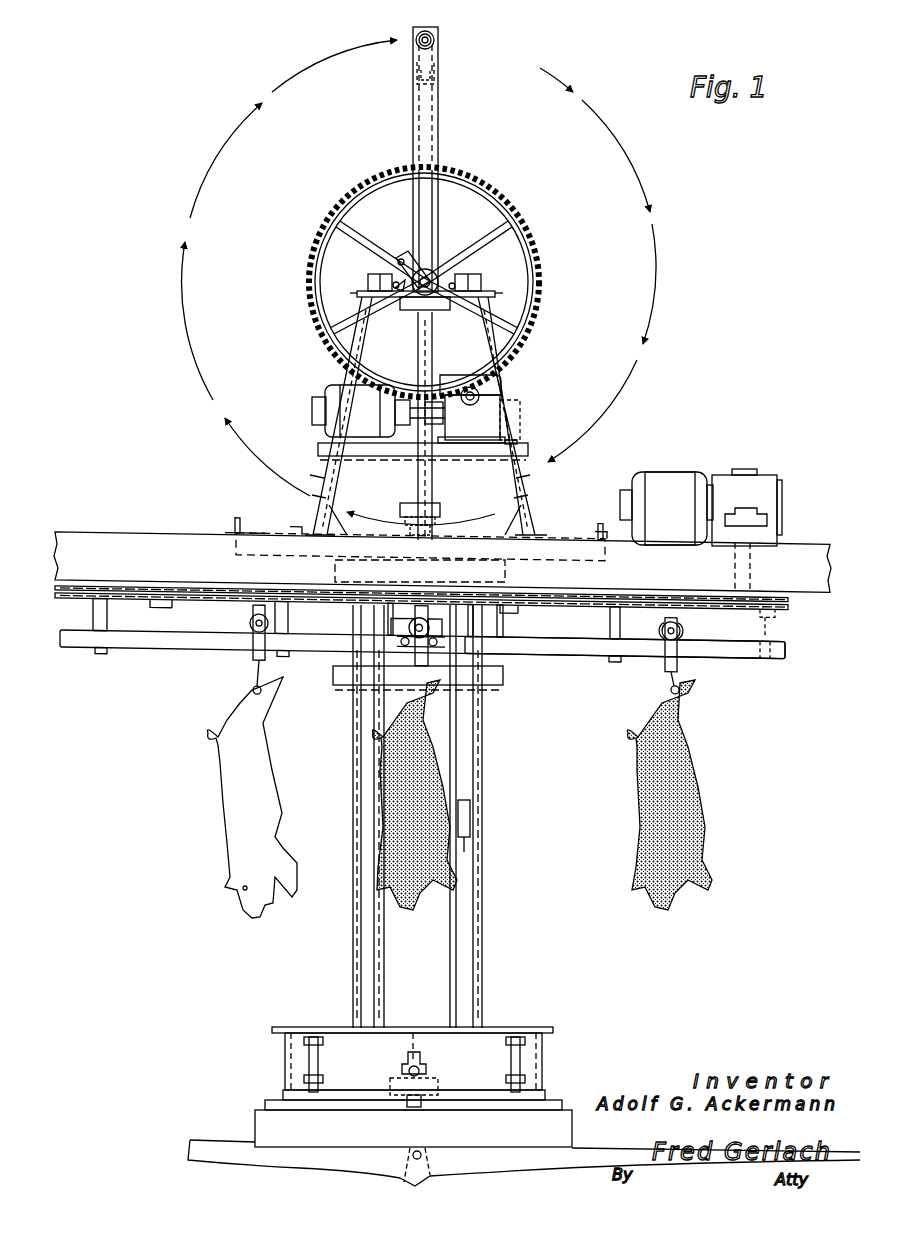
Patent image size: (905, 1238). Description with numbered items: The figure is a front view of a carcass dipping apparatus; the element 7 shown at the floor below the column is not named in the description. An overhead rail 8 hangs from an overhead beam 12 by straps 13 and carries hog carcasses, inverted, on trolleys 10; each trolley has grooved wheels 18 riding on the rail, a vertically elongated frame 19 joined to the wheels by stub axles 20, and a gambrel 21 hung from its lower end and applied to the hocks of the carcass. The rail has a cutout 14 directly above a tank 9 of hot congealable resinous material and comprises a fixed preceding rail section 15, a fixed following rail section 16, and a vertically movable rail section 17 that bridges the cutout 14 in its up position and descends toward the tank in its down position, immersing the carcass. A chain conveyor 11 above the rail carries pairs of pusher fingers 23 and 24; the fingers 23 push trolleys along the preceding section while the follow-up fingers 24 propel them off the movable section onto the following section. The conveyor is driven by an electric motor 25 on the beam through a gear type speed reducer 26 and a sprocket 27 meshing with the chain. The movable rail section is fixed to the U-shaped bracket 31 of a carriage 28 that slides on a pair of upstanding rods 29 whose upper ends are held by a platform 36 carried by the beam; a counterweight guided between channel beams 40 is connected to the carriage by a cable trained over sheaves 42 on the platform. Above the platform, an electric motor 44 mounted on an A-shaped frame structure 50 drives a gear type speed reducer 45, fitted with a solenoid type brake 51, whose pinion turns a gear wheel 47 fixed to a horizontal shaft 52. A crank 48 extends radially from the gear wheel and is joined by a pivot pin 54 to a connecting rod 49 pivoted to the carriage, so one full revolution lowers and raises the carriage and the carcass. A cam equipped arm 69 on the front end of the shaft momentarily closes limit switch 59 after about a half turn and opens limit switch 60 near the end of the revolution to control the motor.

The floor socket 7 is at (419, 1164).
The overhead rail 8 is at (170, 648).
The tank 9 is at (541, 1092).
The trolleys 10 is at (681, 626).
The conveyor 11 is at (783, 598).
The overhead beam 12 is at (442, 562).
The straps 13 is at (612, 616).
The cutout 14 is at (420, 637).
The preceding rail section 15 is at (205, 647).
The following rail section 16 is at (585, 647).
The vertically movable rail section 17 is at (448, 638).
The grooved wheels 18 is at (680, 626).
The trolley frames 19 is at (664, 652).
The stub axles 20 is at (662, 620).
The gambrels 21 is at (662, 700).
The pusher fingers 23 is at (255, 617).
The pusher fingers 24 is at (195, 612).
The electric motor 25 is at (662, 482).
The gear type speed reducer 26 is at (758, 484).
The sprocket 27 is at (772, 628).
The carriage 28 is at (500, 677).
The upstanding rods 29 is at (484, 718).
The U-shaped bracket 31 is at (425, 618).
The platform 36 is at (562, 543).
The channel beams 40 is at (452, 774).
The sheaves 42 is at (429, 490).
The electric motor 44 is at (328, 393).
The gear type speed reducer 45 is at (490, 418).
The gear wheel 47 is at (500, 203).
The crank 48 is at (440, 107).
The connecting rod 49 is at (433, 138).
The A-shaped frame structure 50 is at (528, 458).
The solenoid type brake 51 is at (521, 425).
The horizontal shaft 52 is at (433, 272).
The pivot pin 54 is at (433, 38).
The limit switch 59 is at (481, 282).
The limit switch 60 is at (370, 280).
The cam equipped arm 69 is at (406, 265).